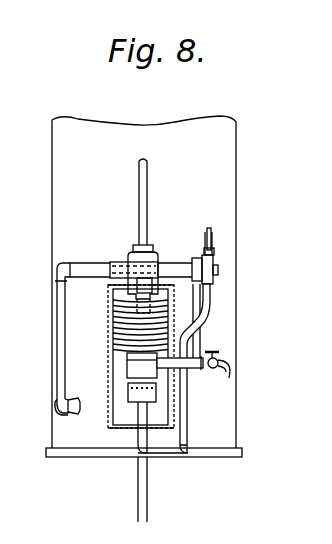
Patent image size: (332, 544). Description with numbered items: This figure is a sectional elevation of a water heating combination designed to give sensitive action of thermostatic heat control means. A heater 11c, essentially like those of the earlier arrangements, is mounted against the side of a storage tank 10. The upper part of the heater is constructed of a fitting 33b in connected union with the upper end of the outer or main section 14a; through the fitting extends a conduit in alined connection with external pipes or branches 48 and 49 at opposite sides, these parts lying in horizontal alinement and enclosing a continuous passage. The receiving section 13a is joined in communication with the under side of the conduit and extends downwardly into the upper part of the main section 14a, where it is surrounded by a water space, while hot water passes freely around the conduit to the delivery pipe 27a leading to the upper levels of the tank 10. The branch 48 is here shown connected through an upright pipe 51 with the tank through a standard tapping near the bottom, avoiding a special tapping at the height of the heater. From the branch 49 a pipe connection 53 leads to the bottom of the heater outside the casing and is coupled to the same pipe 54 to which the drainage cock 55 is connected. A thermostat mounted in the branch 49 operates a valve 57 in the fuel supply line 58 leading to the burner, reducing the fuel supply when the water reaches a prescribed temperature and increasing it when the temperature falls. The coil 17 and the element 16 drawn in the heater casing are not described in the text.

The storage tank 10 is at (52, 170).
The delivery pipe 27a is at (148, 184).
The fitting 33b is at (153, 254).
The branch 48 is at (123, 262).
The upright pipe 51 is at (61, 311).
The branch 49 is at (178, 263).
The valve 57 is at (211, 243).
The pipe connection 53 is at (199, 338).
The fuel supply line 58 is at (187, 433).
The receiving section 13a is at (109, 299).
The heating coil 17 is at (115, 321).
The outer or main section 14a is at (111, 343).
The heater 11c is at (127, 375).
The burner 16 is at (130, 397).
The pipe 54 is at (186, 369).
The drainage cock 55 is at (213, 369).